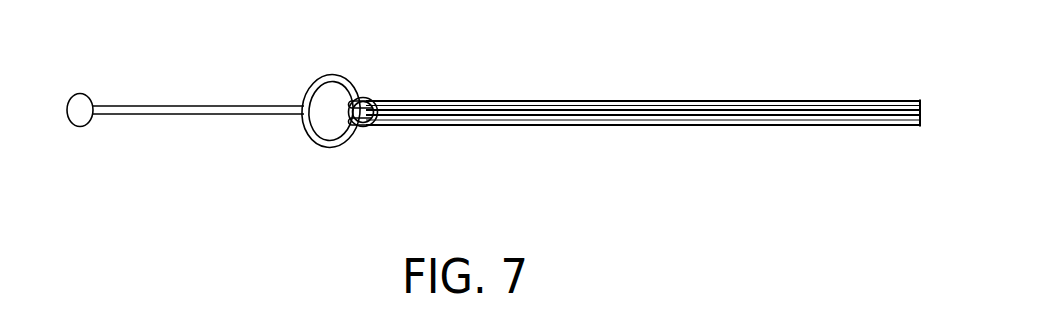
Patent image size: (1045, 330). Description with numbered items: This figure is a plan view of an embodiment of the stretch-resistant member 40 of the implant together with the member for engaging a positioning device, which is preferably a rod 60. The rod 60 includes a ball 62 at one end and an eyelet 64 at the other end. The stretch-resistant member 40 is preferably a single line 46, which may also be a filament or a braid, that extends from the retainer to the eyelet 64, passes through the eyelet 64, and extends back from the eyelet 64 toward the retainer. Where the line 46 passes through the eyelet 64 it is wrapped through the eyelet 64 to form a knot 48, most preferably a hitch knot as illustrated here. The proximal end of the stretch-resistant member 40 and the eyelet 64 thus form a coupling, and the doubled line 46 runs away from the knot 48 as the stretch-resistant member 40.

The stretch-resistant member 40 is at (635, 138).
The line 46 is at (645, 101).
The knot 48 is at (378, 135).
The rod 60 is at (195, 115).
The ball 62 is at (80, 127).
The eyelet 64 is at (315, 139).